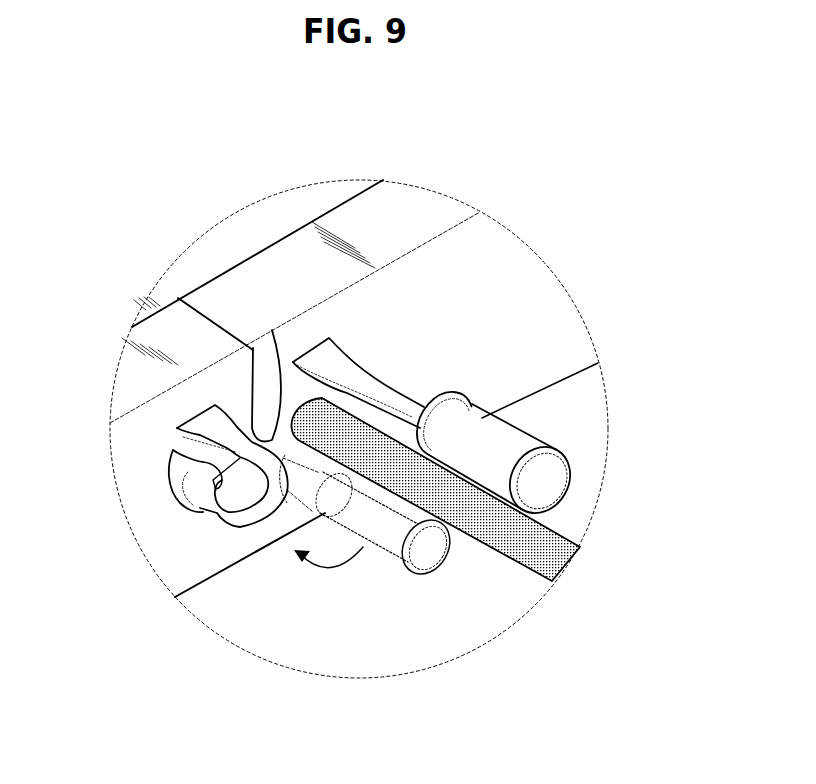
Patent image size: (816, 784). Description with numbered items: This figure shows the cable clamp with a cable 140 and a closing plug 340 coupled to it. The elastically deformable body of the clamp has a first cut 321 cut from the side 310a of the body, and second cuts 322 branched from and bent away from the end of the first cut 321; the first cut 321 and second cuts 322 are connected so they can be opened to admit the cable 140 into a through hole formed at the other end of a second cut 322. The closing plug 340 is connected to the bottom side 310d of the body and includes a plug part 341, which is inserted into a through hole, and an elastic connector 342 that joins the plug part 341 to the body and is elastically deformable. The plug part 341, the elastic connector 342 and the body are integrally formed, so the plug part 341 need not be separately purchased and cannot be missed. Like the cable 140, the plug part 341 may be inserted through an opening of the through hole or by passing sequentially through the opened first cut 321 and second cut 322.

The side of the body 310a is at (403, 217).
The bottom side of the body 310d is at (480, 263).
The first cut 321 is at (220, 318).
The second cut 322 is at (272, 330).
The closing plug 340 is at (370, 364).
The plug part 341 is at (507, 447).
The elastic connector 342 is at (402, 395).
The cable 140 is at (510, 540).